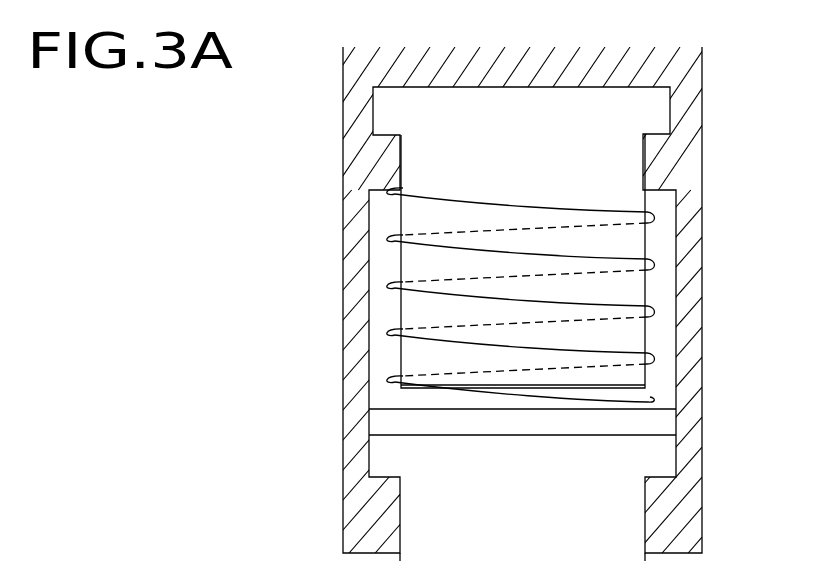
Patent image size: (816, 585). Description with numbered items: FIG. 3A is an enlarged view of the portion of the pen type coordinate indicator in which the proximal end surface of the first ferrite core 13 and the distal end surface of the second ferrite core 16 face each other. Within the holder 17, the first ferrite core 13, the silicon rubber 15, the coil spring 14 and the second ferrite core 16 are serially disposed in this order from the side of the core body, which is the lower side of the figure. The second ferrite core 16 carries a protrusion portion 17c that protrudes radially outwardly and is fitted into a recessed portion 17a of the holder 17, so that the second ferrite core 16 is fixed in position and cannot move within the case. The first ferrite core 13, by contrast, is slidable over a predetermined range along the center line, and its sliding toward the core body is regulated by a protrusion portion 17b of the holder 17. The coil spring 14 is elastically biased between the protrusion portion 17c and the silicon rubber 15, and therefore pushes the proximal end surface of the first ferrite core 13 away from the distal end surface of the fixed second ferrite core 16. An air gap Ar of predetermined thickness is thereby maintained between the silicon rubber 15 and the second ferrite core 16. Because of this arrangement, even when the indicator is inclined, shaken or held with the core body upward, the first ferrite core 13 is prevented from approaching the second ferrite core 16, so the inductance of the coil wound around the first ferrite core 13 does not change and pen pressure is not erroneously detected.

The first ferrite core 13 is at (540, 459).
The coil spring 14 is at (650, 262).
The silicon rubber 15 is at (657, 420).
The second ferrite core 16 is at (487, 108).
The holder 17 is at (672, 65).
The recessed portion 17a is at (373, 100).
The protrusion portion 17b is at (378, 517).
The protrusion portion 17c is at (387, 157).
The air gap Ar is at (433, 396).